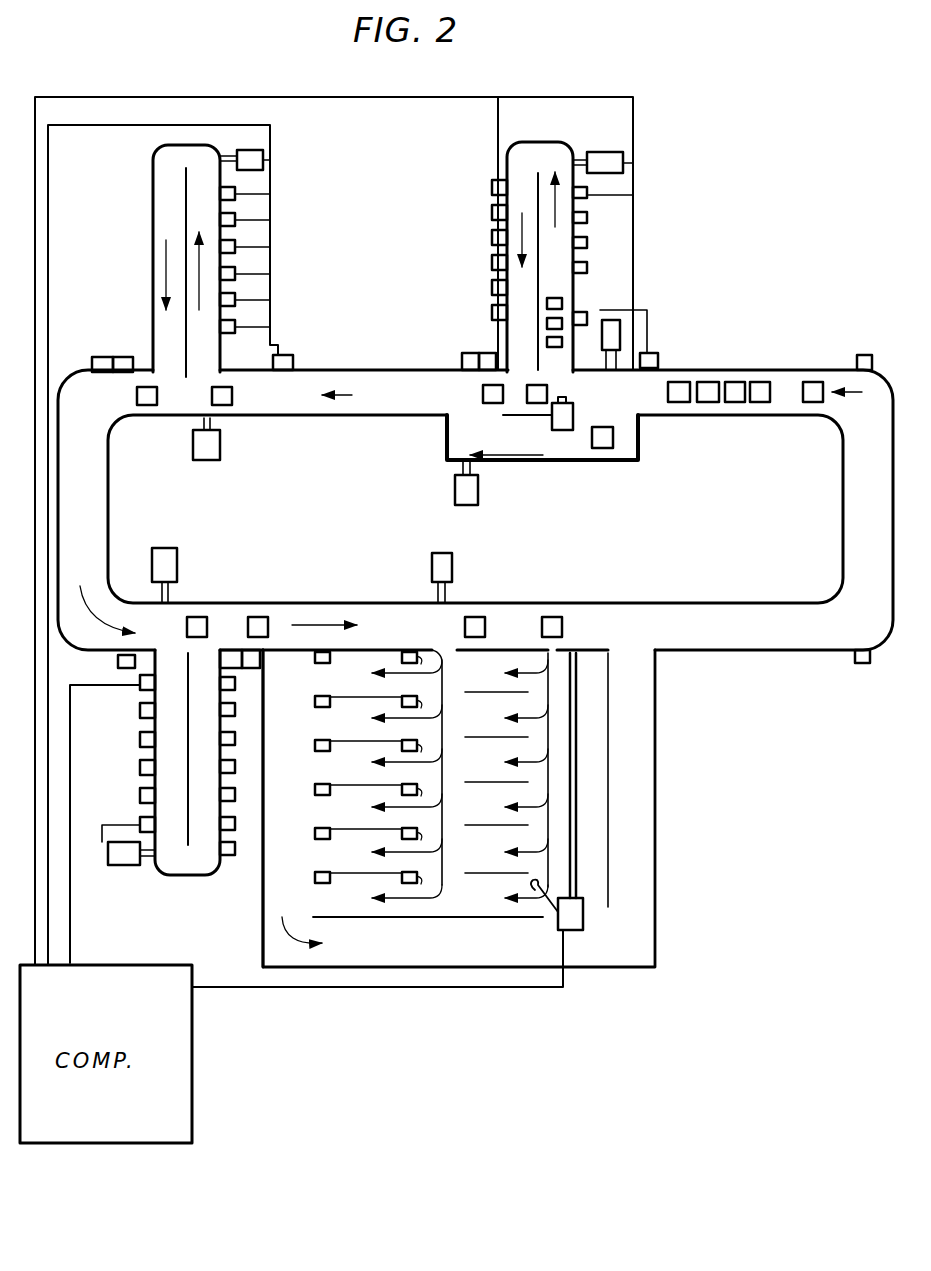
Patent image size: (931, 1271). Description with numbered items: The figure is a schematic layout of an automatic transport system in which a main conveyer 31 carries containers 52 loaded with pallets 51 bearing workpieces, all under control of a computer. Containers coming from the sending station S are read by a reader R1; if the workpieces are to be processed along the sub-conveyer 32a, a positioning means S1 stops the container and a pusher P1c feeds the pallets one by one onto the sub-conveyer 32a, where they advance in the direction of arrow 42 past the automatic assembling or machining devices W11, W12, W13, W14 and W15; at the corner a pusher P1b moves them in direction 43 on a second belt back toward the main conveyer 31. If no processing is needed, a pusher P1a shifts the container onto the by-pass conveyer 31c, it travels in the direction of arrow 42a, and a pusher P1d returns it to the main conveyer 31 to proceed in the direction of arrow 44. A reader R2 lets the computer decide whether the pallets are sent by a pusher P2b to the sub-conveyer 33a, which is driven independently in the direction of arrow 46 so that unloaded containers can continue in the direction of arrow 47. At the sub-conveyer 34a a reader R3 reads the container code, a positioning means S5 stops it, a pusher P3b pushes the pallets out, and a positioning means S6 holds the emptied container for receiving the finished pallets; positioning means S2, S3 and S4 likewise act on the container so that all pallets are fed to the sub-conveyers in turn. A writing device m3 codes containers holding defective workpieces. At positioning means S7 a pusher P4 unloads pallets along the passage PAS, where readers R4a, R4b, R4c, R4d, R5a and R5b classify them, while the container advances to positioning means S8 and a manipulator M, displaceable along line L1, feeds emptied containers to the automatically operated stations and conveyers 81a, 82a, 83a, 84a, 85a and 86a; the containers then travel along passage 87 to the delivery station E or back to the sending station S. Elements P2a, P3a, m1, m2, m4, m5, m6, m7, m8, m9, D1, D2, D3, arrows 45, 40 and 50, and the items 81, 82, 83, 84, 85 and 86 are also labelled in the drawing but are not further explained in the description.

The main conveyer 31 is at (422, 384).
The by-pass conveyer 31c is at (640, 440).
The sub-conveyer 33a is at (165, 148).
The sub-conveyer 32a is at (528, 145).
The sub-conveyer 34a is at (188, 866).
The arrow 46 is at (168, 264).
The upward flow direction 45 is at (199, 258).
The arrow 42 is at (556, 212).
The direction 43 is at (519, 254).
The pusher P2a is at (263, 160).
The pusher P1b is at (605, 152).
The pusher P1a is at (620, 325).
The pusher P1c is at (565, 430).
The pusher P1d is at (475, 498).
The pusher P2b is at (210, 450).
The pusher P3b is at (168, 560).
The pusher P3a is at (122, 856).
The pusher P4 is at (443, 568).
The automatic assembling or machining device W15 is at (587, 195).
The automatic assembling or machining device W14 is at (587, 220).
The automatic assembling or machining device W13 is at (587, 245).
The automatic assembling or machining device W12 is at (587, 270).
The automatic assembling or machining device W11 is at (587, 318).
The pallets 51 is at (554, 309).
The container 52 is at (708, 386).
The pallet flow direction 40 is at (832, 400).
The arrow 44 is at (344, 382).
The arrow 42a is at (497, 443).
The arrow 47 is at (121, 616).
The flow direction 50 is at (324, 637).
The passage 87 is at (319, 935).
The motor m1 is at (486, 353).
The motor m2 is at (123, 357).
The writing device m3 is at (238, 646).
The motor m4 is at (315, 658).
The motor m5 is at (315, 703).
The motor m6 is at (315, 747).
The motor m7 is at (315, 790).
The motor m8 is at (315, 834).
The motor m9 is at (315, 878).
The drive D1 is at (468, 353).
The drive D2 is at (96, 357).
The drive D3 is at (251, 668).
The reader R1 is at (658, 358).
The reader R2 is at (284, 358).
The reader R3 is at (118, 663).
The reader R4a is at (400, 648).
The reader R4b is at (401, 691).
The reader R4c is at (402, 736).
The reader R4d is at (402, 780).
The reader R5a is at (403, 823).
The reader R5b is at (405, 867).
The sending station S is at (866, 355).
The positioning means S1 is at (545, 389).
The positioning means S2 is at (483, 393).
The positioning means S3 is at (232, 396).
The positioning means S4 is at (137, 396).
The positioning means S5 is at (200, 618).
The positioning means S6 is at (260, 618).
The positioning means S7 is at (485, 627).
The positioning means S8 is at (562, 627).
The storage conveyor 81 is at (390, 672).
The storage conveyor 82 is at (390, 717).
The storage conveyor 83 is at (390, 761).
The storage conveyor 84 is at (390, 806).
The storage conveyor 85 is at (390, 851).
The storage conveyor 86 is at (390, 897).
The automatically operated station 81a is at (505, 672).
The automatically operated station 82a is at (505, 717).
The automatically operated station 83a is at (505, 761).
The automatically operated station 84a is at (505, 806).
The automatically operated station 85a is at (505, 851).
The automatically operated station 86a is at (505, 897).
The line L1 is at (577, 752).
The manipulator M is at (583, 920).
The passage PAS is at (428, 907).
The delivery station E is at (864, 663).